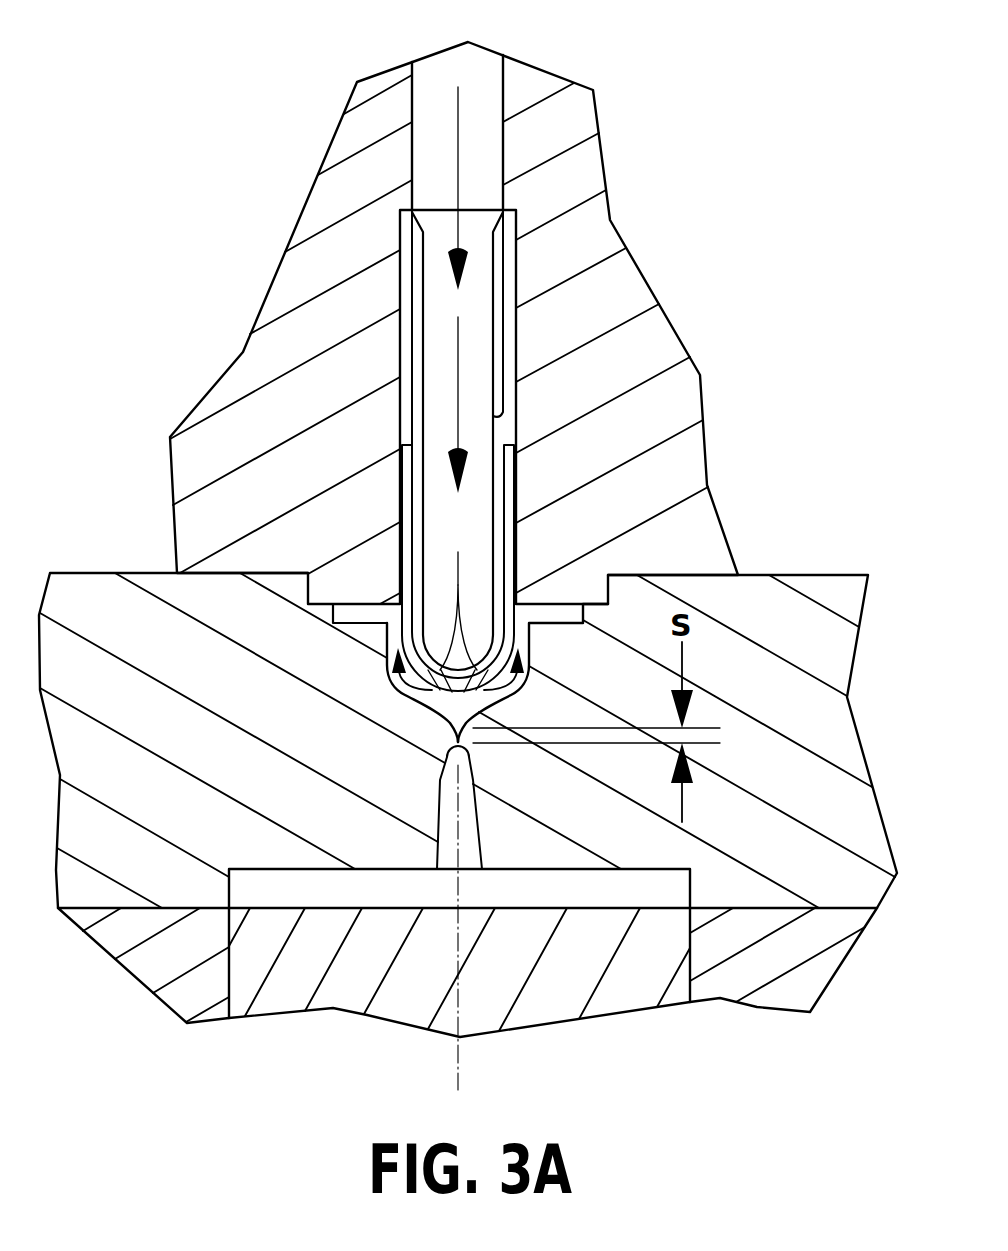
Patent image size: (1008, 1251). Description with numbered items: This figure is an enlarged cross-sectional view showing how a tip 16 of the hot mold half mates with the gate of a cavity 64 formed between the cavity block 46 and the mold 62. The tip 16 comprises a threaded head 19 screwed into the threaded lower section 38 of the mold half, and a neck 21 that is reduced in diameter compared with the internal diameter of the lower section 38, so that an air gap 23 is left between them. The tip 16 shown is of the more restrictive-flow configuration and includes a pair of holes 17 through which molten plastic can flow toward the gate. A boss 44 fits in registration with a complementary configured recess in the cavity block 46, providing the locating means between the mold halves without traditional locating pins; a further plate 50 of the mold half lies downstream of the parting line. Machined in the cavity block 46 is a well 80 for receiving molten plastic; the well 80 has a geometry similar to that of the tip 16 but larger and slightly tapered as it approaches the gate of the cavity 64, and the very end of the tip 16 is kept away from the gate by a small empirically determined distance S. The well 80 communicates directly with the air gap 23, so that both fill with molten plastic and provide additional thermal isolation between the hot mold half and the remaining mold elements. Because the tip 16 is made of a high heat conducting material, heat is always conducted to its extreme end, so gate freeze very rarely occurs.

The tip 16 is at (535, 332).
The holes 17 is at (430, 668).
The threaded head 19 is at (514, 276).
The neck 21 is at (515, 413).
The air gap 23 is at (515, 490).
The lower section 38 is at (502, 84).
The boss 44 is at (307, 583).
The cavity block 46 is at (818, 587).
The plate 50 is at (817, 943).
The mold 62 is at (620, 988).
The cavity 64 is at (645, 880).
The well 80 is at (362, 612).